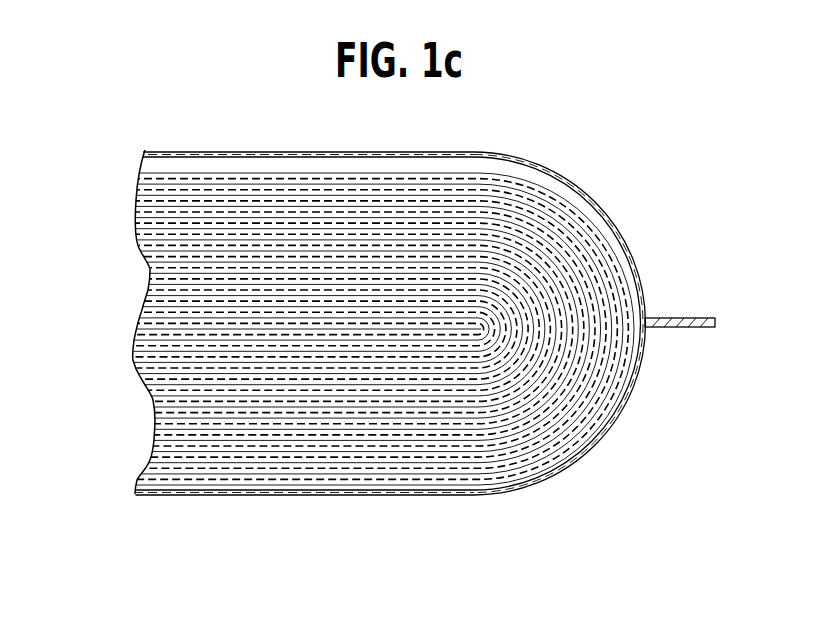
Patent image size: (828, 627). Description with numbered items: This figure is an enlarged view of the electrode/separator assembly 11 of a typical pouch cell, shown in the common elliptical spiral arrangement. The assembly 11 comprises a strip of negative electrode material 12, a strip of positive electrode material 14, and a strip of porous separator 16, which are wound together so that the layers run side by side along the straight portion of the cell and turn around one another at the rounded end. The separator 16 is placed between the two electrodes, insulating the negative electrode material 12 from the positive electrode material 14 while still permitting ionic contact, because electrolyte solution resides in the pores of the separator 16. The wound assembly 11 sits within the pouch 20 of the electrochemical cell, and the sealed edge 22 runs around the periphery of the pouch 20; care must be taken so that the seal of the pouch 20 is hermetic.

The electrode/separator assembly 11 is at (417, 331).
The negative electrode material 12 is at (458, 463).
The positive electrode material 14 is at (613, 278).
The porous separator 16 is at (475, 170).
The pouch 20 is at (285, 494).
The sealed edge 22 is at (676, 328).